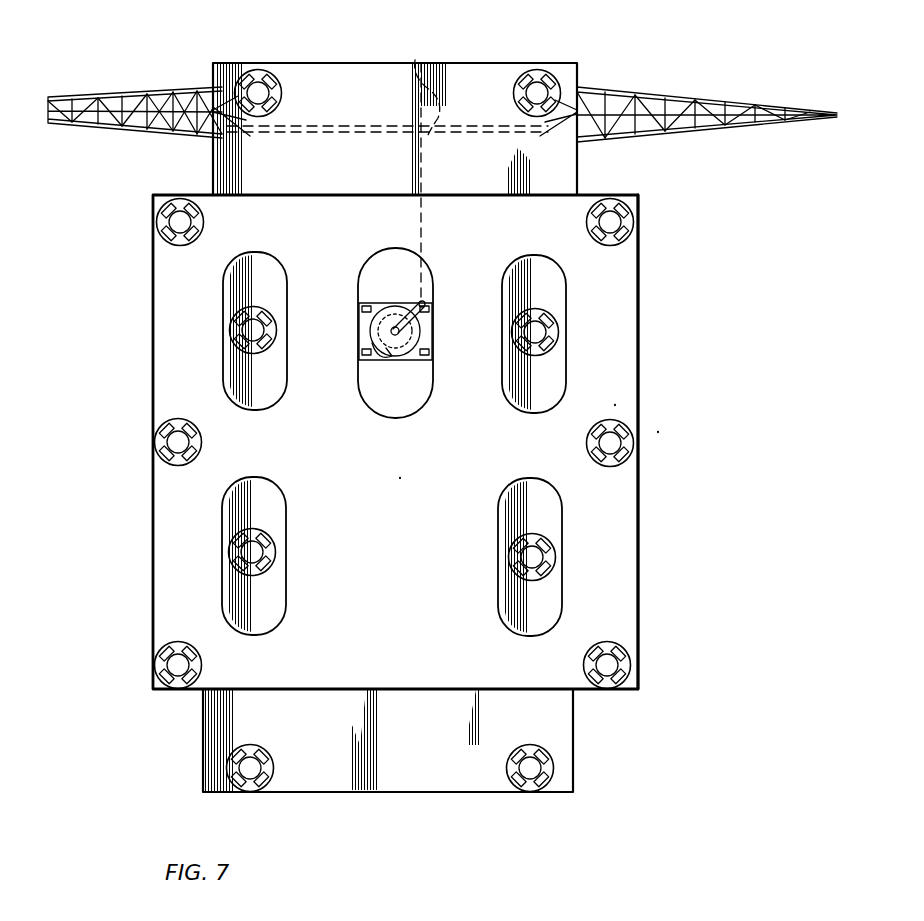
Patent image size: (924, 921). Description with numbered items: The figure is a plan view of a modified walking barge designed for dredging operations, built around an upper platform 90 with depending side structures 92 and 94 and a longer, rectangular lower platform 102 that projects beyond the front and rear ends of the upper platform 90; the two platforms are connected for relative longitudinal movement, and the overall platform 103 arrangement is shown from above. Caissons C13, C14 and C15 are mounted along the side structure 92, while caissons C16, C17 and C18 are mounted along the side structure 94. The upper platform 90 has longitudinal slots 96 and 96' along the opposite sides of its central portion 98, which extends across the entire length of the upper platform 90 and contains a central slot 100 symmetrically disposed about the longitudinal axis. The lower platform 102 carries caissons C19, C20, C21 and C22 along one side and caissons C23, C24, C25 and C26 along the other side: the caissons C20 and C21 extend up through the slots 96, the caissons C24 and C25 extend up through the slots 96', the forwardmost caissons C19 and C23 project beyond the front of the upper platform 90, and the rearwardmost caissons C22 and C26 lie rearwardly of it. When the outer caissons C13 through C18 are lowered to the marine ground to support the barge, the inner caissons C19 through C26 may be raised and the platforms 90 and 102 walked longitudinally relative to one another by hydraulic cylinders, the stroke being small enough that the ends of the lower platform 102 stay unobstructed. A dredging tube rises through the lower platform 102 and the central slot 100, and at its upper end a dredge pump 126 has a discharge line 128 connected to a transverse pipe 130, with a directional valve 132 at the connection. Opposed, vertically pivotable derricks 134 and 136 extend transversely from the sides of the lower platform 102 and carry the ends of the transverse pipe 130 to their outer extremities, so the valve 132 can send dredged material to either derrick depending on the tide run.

The upper platform 90 is at (615, 405).
The side structure 92 is at (152, 530).
The side structure 94 is at (640, 548).
The longitudinal slot 96 is at (275, 438).
The longitudinal slot 96' is at (558, 445).
The central portion 98 is at (418, 493).
The central slot 100 is at (425, 393).
The lower platform 102 is at (412, 768).
The plate 103 is at (658, 432).
The dredge pump 126 is at (408, 358).
The discharge line 128 is at (428, 240).
The transverse pipe 130 is at (350, 120).
The directional valve 132 is at (445, 44).
The derrick 134 is at (128, 100).
The derrick 136 is at (708, 107).
The caisson C13 is at (176, 228).
The caisson C14 is at (165, 440).
The caisson C15 is at (178, 670).
The caisson C16 is at (615, 222).
The caisson C17 is at (615, 447).
The caisson C18 is at (615, 668).
The caisson C19 is at (270, 92).
The caisson C20 is at (275, 335).
The caisson C21 is at (273, 556).
The caisson C22 is at (272, 776).
The caisson C23 is at (548, 82).
The caisson C24 is at (553, 333).
The caisson C25 is at (548, 556).
The caisson C26 is at (548, 768).